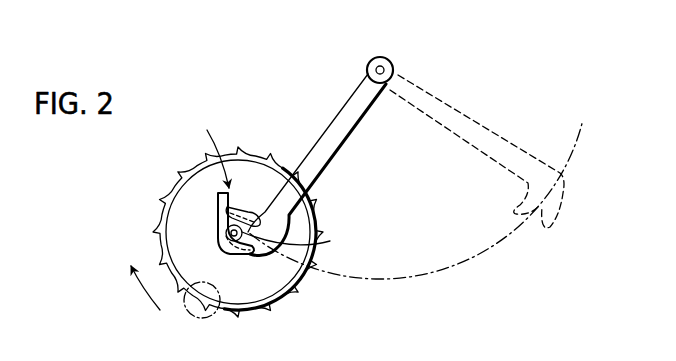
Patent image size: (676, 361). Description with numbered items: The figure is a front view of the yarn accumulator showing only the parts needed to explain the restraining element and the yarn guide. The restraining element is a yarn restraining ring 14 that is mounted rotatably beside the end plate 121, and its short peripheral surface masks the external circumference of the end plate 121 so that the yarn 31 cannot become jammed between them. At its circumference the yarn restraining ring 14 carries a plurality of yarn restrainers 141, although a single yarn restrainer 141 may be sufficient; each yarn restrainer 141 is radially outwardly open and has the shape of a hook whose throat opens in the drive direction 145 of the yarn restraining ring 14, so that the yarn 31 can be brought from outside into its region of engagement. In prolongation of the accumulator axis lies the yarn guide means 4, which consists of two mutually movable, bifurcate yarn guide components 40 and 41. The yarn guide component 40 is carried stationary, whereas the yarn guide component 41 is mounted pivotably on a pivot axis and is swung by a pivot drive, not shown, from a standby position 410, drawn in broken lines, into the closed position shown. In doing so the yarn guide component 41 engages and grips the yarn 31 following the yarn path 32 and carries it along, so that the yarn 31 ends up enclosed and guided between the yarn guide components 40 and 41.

The yarn restraining ring 14 is at (170, 204).
The yarn guide means 4 is at (212, 151).
The end plate 121 is at (252, 177).
The yarn guide component 41 is at (337, 151).
The standby position 410 is at (472, 123).
The yarn guide component 40 is at (219, 226).
The yarn 31 is at (296, 242).
The yarn path 32 is at (476, 258).
The drive direction 145 is at (148, 300).
The yarn restrainer 141 is at (196, 306).